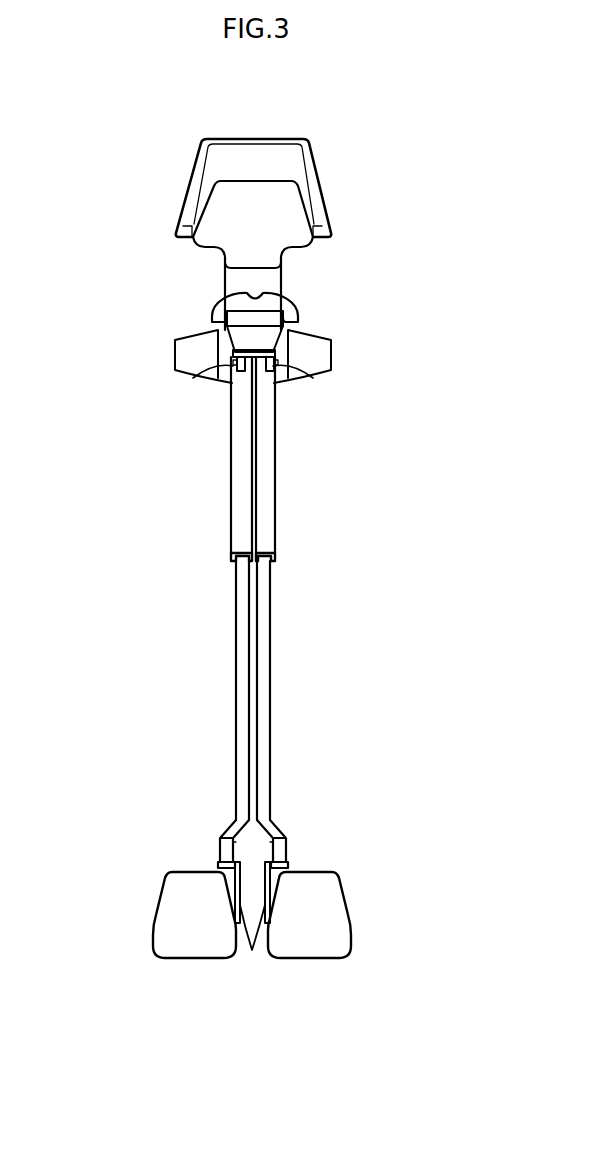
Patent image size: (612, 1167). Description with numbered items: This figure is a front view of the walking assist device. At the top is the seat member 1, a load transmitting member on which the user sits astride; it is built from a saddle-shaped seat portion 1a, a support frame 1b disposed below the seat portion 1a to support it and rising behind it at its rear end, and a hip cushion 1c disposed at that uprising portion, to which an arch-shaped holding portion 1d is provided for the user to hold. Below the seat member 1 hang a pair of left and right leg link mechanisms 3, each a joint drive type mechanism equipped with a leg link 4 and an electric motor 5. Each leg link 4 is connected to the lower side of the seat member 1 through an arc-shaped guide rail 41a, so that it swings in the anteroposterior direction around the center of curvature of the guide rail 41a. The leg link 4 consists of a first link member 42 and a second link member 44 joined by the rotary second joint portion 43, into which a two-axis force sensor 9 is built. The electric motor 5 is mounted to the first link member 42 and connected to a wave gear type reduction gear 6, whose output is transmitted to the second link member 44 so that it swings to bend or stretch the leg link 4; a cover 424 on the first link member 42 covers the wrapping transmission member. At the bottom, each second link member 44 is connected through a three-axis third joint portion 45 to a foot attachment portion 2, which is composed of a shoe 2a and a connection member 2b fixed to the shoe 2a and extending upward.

The seat member 1 is at (297, 304).
The seat portion 1a is at (218, 312).
The support frame 1b is at (283, 317).
The hip cushion 1c is at (297, 210).
The holding portion 1d is at (266, 140).
The foot attachment portion 2 is at (250, 916).
The shoe 2a is at (165, 930).
The connection member 2b is at (252, 944).
The leg link mechanism 3 is at (251, 459).
The leg link 4 is at (250, 699).
The electric motor 5 is at (175, 353).
The reduction gear 6 is at (228, 386).
The 2-axis force sensor 9 is at (220, 852).
The guide rail 41a is at (230, 369).
The first link member 42 is at (231, 453).
The second joint portion 43 is at (222, 556).
The second link member 44 is at (236, 730).
The third joint portion 45 is at (228, 832).
The cover 424 is at (231, 508).